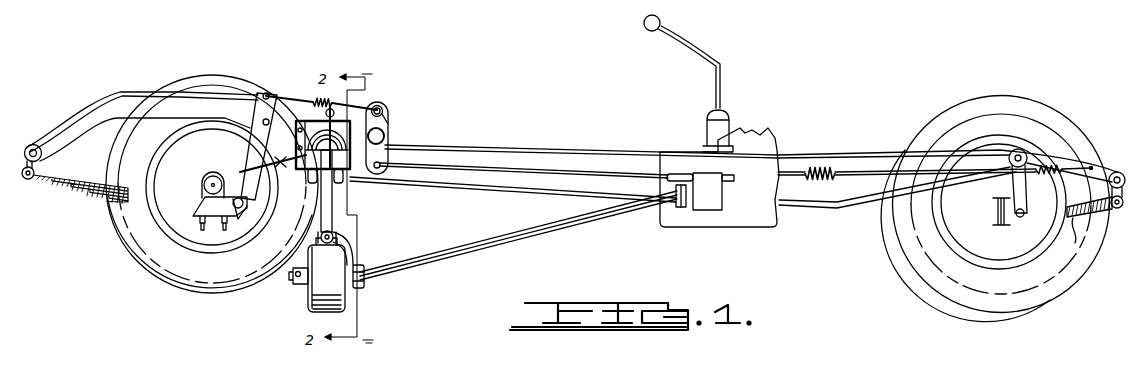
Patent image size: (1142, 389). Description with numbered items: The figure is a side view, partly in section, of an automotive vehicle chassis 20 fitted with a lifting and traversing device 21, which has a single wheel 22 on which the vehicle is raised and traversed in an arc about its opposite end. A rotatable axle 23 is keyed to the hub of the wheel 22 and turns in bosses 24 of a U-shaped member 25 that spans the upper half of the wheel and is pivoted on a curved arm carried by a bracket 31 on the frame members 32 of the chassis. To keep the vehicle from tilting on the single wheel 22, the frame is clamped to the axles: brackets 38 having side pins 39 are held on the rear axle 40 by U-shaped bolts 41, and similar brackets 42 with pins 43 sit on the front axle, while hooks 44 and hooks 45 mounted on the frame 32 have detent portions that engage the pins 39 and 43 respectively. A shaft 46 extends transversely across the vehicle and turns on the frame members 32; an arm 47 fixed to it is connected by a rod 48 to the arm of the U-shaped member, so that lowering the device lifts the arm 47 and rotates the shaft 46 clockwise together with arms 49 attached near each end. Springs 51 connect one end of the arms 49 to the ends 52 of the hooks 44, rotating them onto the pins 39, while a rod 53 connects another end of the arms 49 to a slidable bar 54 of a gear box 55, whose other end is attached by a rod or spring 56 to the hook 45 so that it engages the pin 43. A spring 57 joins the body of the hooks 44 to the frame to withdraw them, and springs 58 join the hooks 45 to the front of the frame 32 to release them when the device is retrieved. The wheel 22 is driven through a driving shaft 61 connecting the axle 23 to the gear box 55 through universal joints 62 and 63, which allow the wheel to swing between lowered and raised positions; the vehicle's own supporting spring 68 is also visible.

The automotive vehicle chassis 20 is at (565, 152).
The lifting and traversing device 21 is at (256, 311).
The single wheel 22 is at (346, 298).
The rotatable axle 23 is at (295, 285).
The bosses 24 is at (352, 266).
The U-shaped member 25 is at (340, 236).
The bracket 31 is at (392, 128).
The frame members 32 is at (458, 147).
The brackets 38 is at (204, 207).
The pins 39 is at (238, 198).
The rear axle 40 is at (213, 173).
The bolts 41 is at (224, 231).
The brackets 42 is at (994, 219).
The pins 43 is at (1021, 220).
The hooks 44 is at (278, 105).
The hooks 45 is at (1008, 168).
The shaft 46 is at (386, 138).
The arm 47 is at (383, 105).
The rod 48 is at (344, 178).
The arms 49 is at (388, 118).
The springs 51 is at (352, 112).
The ends 52 is at (256, 90).
The rod 53 is at (545, 170).
The slidable bar 54 is at (680, 172).
The gear box 55 is at (722, 205).
The rod or spring 56 is at (794, 172).
The spring 57 is at (283, 170).
The springs 58 is at (1107, 178).
The driving shaft 61 is at (494, 246).
The universal joint 62 is at (366, 268).
The universal joint 63 is at (676, 192).
The supporting spring 68 is at (995, 209).